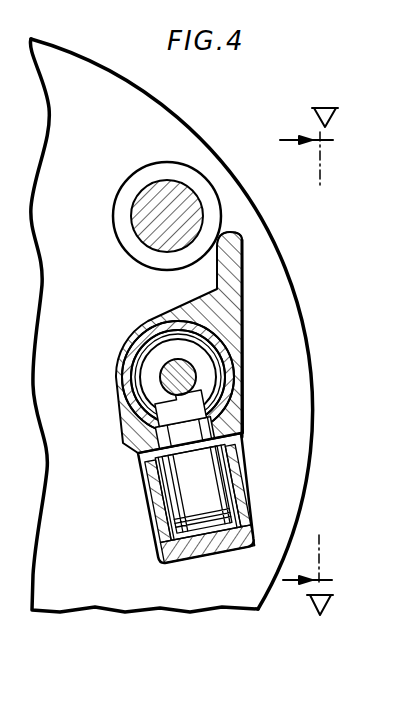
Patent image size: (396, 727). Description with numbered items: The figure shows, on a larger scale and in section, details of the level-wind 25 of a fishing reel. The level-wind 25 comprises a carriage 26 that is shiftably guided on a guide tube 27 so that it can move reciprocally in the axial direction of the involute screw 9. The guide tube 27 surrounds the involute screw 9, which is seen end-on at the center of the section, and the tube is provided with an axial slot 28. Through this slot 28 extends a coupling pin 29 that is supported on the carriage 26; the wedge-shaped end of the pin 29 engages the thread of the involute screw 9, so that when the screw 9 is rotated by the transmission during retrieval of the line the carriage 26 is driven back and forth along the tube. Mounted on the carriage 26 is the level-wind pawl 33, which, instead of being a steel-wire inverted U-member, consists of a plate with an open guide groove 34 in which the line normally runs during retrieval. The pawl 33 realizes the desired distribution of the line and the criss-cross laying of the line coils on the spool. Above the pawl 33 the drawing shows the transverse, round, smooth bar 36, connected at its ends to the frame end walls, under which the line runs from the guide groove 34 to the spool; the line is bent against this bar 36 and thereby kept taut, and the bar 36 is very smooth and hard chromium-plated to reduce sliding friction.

The involute screw 9 is at (210, 376).
The level-wind 25 is at (121, 441).
The carriage 26 is at (243, 416).
The guide tube 27 is at (242, 346).
The axial slot 28 is at (239, 436).
The coupling pin 29 is at (241, 402).
The level-wind pawl 33 is at (245, 266).
The guide groove 34 is at (230, 223).
The bar 36 is at (204, 200).